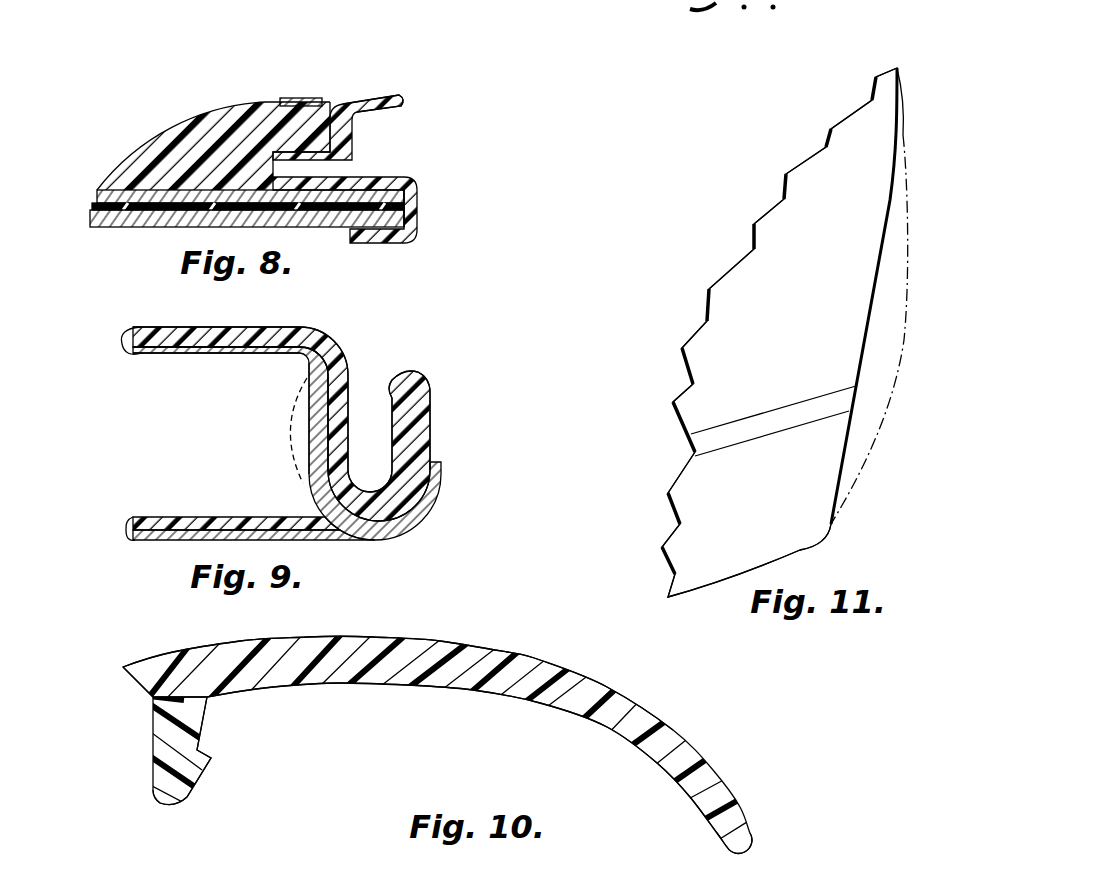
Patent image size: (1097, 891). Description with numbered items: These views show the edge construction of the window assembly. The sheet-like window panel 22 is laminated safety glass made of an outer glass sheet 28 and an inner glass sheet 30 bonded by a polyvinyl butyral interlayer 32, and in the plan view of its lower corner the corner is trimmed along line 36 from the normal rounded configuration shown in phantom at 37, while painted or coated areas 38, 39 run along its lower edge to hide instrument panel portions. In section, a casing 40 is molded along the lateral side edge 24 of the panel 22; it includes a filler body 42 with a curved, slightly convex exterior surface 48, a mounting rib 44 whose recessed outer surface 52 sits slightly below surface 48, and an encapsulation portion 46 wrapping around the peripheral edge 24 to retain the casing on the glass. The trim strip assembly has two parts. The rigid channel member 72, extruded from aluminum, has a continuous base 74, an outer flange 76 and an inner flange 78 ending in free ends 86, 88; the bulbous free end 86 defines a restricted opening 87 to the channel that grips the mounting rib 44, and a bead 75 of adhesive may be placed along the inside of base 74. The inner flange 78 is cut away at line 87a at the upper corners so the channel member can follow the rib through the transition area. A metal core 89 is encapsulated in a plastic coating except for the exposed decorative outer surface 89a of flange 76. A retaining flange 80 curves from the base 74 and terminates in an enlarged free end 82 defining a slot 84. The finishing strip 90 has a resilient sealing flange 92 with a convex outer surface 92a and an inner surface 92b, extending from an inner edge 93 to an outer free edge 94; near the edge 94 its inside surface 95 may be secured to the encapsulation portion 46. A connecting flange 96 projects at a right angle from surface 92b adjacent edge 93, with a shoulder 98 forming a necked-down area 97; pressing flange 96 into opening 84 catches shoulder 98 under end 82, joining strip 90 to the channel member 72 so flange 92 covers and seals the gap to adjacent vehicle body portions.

In FIG. 8, the window panel 22 is at (254, 208).
In FIG. 11, the window panel 22 is at (758, 210).
In FIG. 8, the lateral side edge 24 is at (418, 210).
In FIG. 8, the outer glass sheet 28 is at (92, 205).
In FIG. 11, the outer glass sheet 28 is at (808, 276).
In FIG. 8, the inner glass sheet 30 is at (92, 217).
In FIG. 8, the intermediate adhesive layer 32 is at (90, 208).
In FIG. 11, the trim line 36 is at (895, 185).
In FIG. 11, the normal rounded configuration 37 is at (876, 466).
In FIG. 11, the painted or coated area 38 is at (683, 490).
In FIG. 11, the painted or coated area 39 is at (702, 440).
In FIG. 8, the casing 40 is at (213, 113).
In FIG. 8, the filler body 42 is at (176, 138).
In FIG. 8, the mounting rib 44 is at (300, 133).
In FIG. 8, the encapsulation portion 46 is at (418, 194).
In FIG. 8, the exterior surface 48 is at (135, 166).
In FIG. 8, the recessed surface 52 is at (287, 105).
In FIG. 8, the rigid channel member 72 is at (330, 101).
In FIG. 9, the rigid channel member 72 is at (390, 351).
In FIG. 9, the base 74 is at (312, 416).
In FIG. 9, the bead 75 is at (300, 381).
In FIG. 9, the outer flange 76 is at (186, 347).
In FIG. 9, the inner flange 78 is at (160, 517).
In FIG. 9, the retaining flange 80 is at (432, 460).
In FIG. 9, the enlarged free end 82 is at (412, 383).
In FIG. 9, the slot 84 is at (367, 400).
In FIG. 9, the free end 86 is at (128, 347).
In FIG. 9, the restricted opening 87 is at (190, 435).
In FIG. 9, the line 87a is at (300, 481).
In FIG. 9, the free end 88 is at (130, 518).
In FIG. 9, the core 89 is at (321, 347).
In FIG. 9, the outer surface 89a is at (222, 326).
In FIG. 8, the finishing strip 90 is at (398, 93).
In FIG. 10, the finishing strip 90 is at (309, 758).
In FIG. 10, the sealing flange 92 is at (530, 660).
In FIG. 10, the outer surface 92a is at (360, 634).
In FIG. 10, the inner surface 92b is at (362, 686).
In FIG. 10, the inner edge 93 is at (123, 667).
In FIG. 10, the outer free edge 94 is at (745, 840).
In FIG. 10, the inside surface 95 is at (693, 803).
In FIG. 10, the connecting flange 96 is at (160, 804).
In FIG. 10, the necked-down area 97 is at (157, 743).
In FIG. 10, the shoulder 98 is at (200, 750).